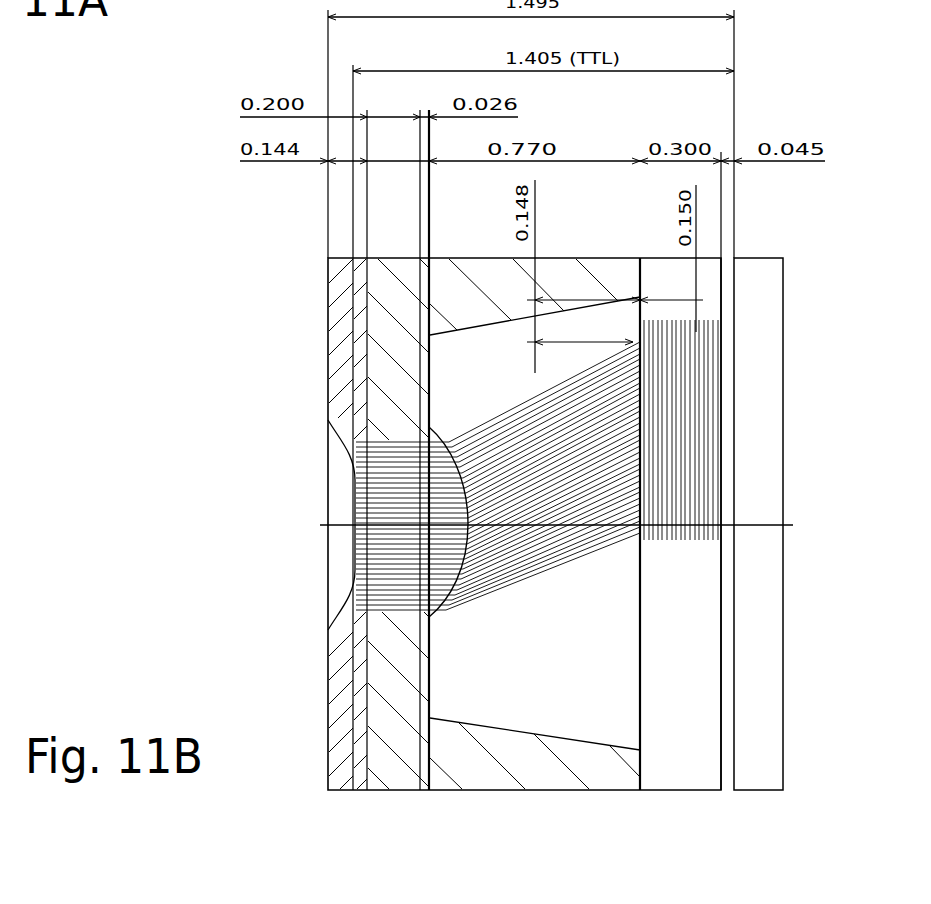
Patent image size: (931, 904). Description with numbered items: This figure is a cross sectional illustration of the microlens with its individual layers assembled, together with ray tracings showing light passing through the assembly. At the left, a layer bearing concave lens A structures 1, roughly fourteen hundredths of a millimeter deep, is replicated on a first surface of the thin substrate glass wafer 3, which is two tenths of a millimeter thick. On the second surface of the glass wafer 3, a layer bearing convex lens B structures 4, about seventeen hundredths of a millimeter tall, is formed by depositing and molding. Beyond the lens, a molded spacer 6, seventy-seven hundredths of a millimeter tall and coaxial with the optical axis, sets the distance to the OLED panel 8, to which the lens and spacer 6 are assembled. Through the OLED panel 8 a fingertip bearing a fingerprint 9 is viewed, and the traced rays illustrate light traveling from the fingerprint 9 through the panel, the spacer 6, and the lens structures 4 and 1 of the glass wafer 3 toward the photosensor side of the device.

The concave lens A structures 1 is at (332, 313).
The thin substrate glass wafer 3 is at (404, 320).
The convex lens B structures 4 is at (430, 570).
The molded spacer 6 is at (583, 289).
The OLED panel 8 is at (680, 612).
The fingerprint 9 is at (768, 612).